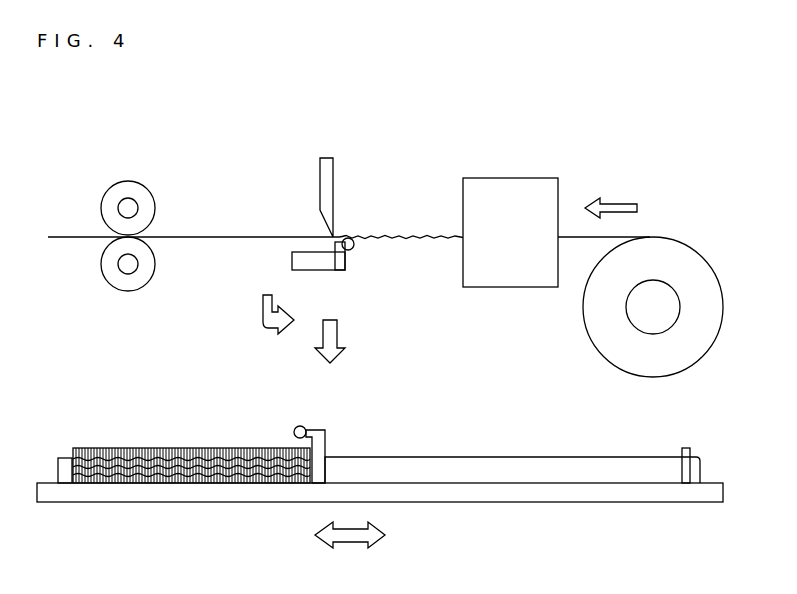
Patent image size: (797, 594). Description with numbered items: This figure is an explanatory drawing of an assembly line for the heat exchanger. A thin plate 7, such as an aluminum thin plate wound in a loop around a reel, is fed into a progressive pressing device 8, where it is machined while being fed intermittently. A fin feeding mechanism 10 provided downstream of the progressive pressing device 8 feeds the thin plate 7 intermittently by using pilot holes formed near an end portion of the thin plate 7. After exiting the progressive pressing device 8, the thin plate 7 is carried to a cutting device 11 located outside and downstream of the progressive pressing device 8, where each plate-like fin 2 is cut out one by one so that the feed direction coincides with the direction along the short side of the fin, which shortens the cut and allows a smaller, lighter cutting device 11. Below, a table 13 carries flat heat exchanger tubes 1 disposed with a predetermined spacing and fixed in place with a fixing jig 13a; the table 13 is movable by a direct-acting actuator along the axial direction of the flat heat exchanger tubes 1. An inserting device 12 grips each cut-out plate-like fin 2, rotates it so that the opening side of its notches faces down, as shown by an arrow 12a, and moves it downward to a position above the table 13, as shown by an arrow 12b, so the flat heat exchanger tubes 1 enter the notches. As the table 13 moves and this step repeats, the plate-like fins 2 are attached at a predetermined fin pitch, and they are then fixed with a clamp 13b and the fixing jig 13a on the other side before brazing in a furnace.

The flat heat exchanger tube 1 is at (420, 470).
The plate-like fin 2 is at (312, 250).
The thin plate 7 is at (680, 243).
The progressive pressing device 8 is at (510, 188).
The fin feeding mechanism 10 is at (128, 192).
The cutting device 11 is at (330, 173).
The inserting device 12 is at (340, 257).
The arrow 12a is at (270, 317).
The arrow 12b is at (330, 340).
The table 13 is at (563, 503).
The fixing jig 13a is at (68, 452).
The clamp 13b is at (328, 423).